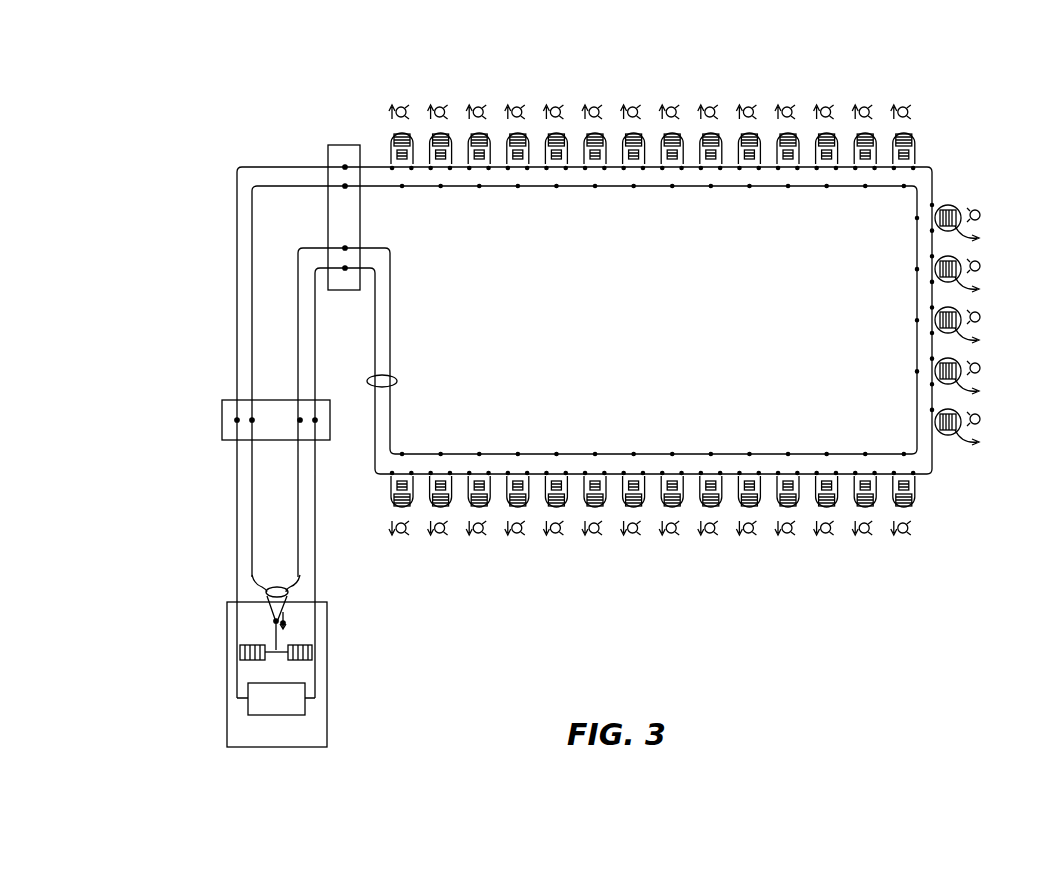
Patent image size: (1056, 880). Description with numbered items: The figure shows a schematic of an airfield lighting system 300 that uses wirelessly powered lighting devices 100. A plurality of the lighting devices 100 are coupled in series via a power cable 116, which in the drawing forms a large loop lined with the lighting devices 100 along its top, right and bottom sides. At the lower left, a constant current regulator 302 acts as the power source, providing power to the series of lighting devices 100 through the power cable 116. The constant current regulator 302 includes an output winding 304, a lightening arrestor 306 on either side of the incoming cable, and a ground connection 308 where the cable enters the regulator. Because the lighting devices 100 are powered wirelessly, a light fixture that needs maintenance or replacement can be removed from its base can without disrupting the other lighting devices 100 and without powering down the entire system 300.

The airfield lighting system 300 is at (246, 85).
The wirelessly powered lighting device 100 is at (920, 540).
The power cable 116 is at (237, 222).
The constant current regulator 302 is at (227, 670).
The output winding 304 is at (248, 705).
The lightening arrestor 306 is at (255, 646).
The ground connection 308 is at (290, 621).